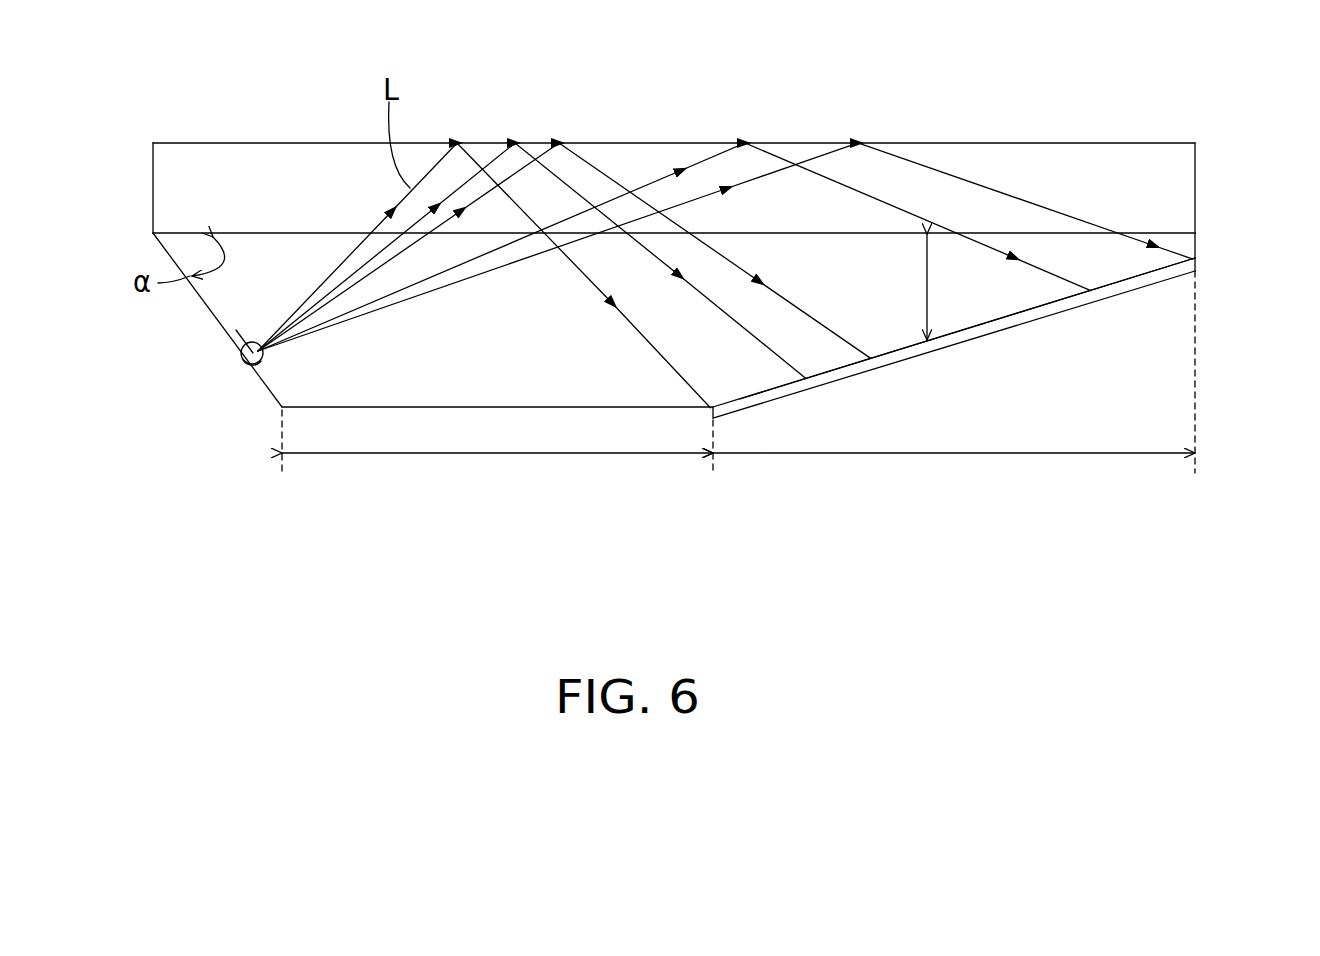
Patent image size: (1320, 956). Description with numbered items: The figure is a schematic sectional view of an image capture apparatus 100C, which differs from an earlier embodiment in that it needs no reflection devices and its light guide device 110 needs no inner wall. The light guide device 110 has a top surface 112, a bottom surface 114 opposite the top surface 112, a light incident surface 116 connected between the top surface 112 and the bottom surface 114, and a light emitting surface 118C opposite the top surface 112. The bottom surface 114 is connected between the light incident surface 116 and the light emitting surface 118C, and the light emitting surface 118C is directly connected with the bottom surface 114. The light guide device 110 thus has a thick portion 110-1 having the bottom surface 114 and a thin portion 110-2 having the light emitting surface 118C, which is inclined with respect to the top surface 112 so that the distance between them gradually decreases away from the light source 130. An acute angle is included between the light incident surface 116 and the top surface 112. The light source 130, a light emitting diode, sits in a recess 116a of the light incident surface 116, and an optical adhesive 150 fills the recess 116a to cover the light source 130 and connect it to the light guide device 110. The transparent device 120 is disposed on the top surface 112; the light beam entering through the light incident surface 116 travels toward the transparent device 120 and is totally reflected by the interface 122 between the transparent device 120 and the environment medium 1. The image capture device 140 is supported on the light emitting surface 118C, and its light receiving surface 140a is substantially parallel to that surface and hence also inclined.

The environment medium 1 is at (147, 76).
The image capture apparatus 100C is at (1260, 586).
The light guide device 110 is at (1185, 246).
The thick portion 110-1 is at (497, 453).
The thin portion 110-2 is at (954, 385).
The top surface 112 is at (180, 231).
The bottom surface 114 is at (318, 411).
The light incident surface 116 is at (203, 303).
The recess 116a is at (243, 355).
The light emitting surface 118C is at (1148, 276).
The transparent device 120 is at (1177, 177).
The interface 122 is at (1157, 140).
The light source 130 is at (250, 366).
The image capture device 140 is at (1017, 318).
The light receiving surface 140a is at (1095, 286).
The optical adhesive 150 is at (257, 371).